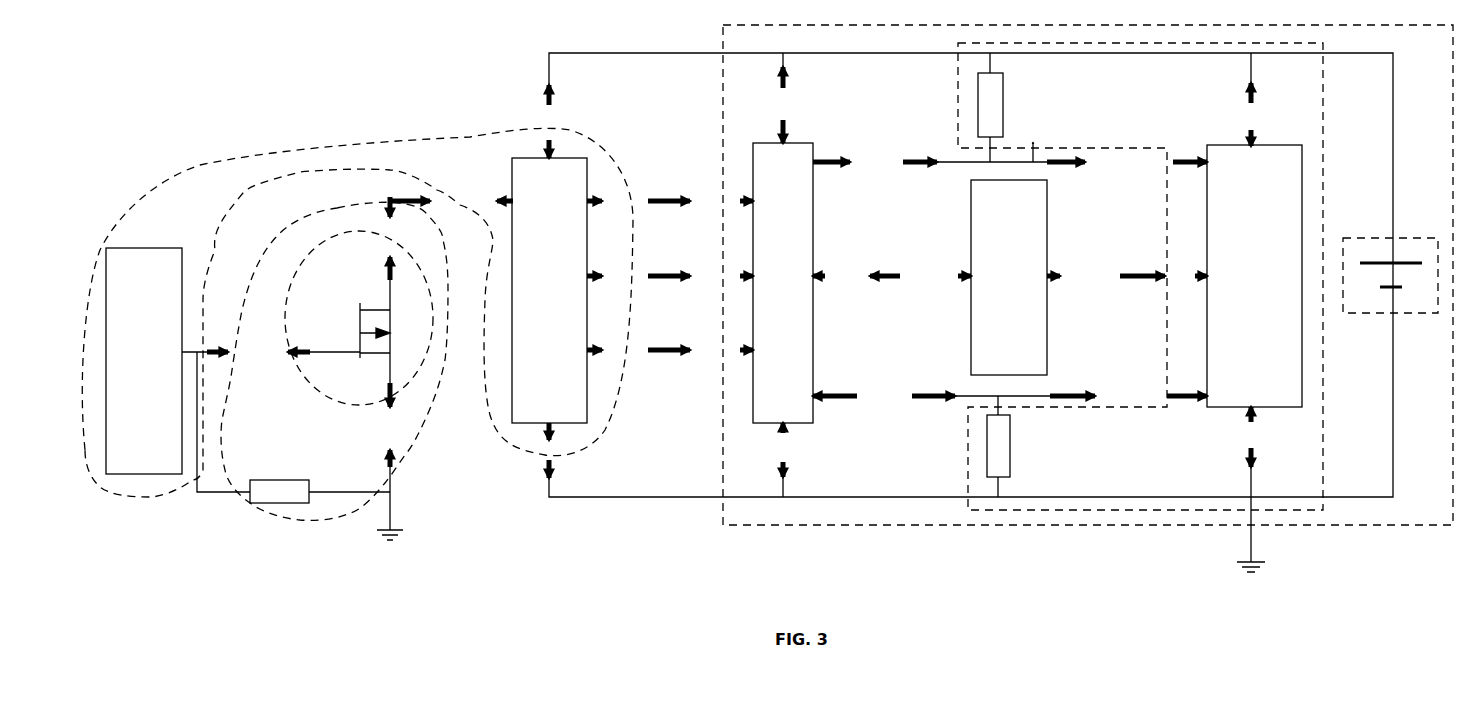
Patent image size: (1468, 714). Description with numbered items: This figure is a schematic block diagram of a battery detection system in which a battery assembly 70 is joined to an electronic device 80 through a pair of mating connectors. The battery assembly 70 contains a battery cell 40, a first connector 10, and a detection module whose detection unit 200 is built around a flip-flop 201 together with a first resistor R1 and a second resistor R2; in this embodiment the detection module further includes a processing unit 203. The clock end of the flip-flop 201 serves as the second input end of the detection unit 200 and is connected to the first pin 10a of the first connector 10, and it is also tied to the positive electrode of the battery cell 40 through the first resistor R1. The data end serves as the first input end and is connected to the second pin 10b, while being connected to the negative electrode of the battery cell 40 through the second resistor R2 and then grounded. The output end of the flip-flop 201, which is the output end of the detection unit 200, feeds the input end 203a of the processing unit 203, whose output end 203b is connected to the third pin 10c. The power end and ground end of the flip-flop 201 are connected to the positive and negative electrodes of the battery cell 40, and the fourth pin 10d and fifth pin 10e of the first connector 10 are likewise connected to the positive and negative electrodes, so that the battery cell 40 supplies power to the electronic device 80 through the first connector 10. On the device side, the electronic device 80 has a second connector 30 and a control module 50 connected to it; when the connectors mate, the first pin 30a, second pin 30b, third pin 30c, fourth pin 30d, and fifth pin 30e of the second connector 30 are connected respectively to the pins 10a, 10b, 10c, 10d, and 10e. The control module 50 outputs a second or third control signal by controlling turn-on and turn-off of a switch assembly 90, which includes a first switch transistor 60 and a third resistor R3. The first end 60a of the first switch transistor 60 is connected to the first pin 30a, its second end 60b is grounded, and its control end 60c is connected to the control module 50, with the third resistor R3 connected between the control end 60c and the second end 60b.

The first connector 10 is at (783, 283).
The first pin 10a is at (870, 181).
The second pin 10b is at (871, 373).
The third pin 10c is at (781, 276).
The fourth pin 10d is at (784, 98).
The fifth pin 10e is at (783, 460).
The second connector 30 is at (549, 290).
The first pin 30a is at (567, 201).
The second pin 30b is at (638, 350).
The third pin 30c is at (638, 276).
The fourth pin 30d is at (552, 121).
The fifth pin 30e is at (551, 450).
The battery cell 40 is at (1413, 315).
The control module 50 is at (144, 361).
The first switch transistor 60 is at (297, 287).
The first end 60a is at (399, 253).
The second end 60b is at (384, 446).
The control end 60c is at (258, 353).
The battery assembly 70 is at (803, 527).
The electronic device 80 is at (188, 177).
The switch assembly 90 is at (403, 455).
The detection unit 200 is at (1280, 514).
The flip-flop 201 is at (1174, 312).
The processing unit 203 is at (1009, 277).
The input end 203a is at (1106, 276).
The output end 203b is at (920, 276).
The first resistor R1 is at (1008, 107).
The second resistor R2 is at (1018, 446).
The third resistor R3 is at (279, 476).